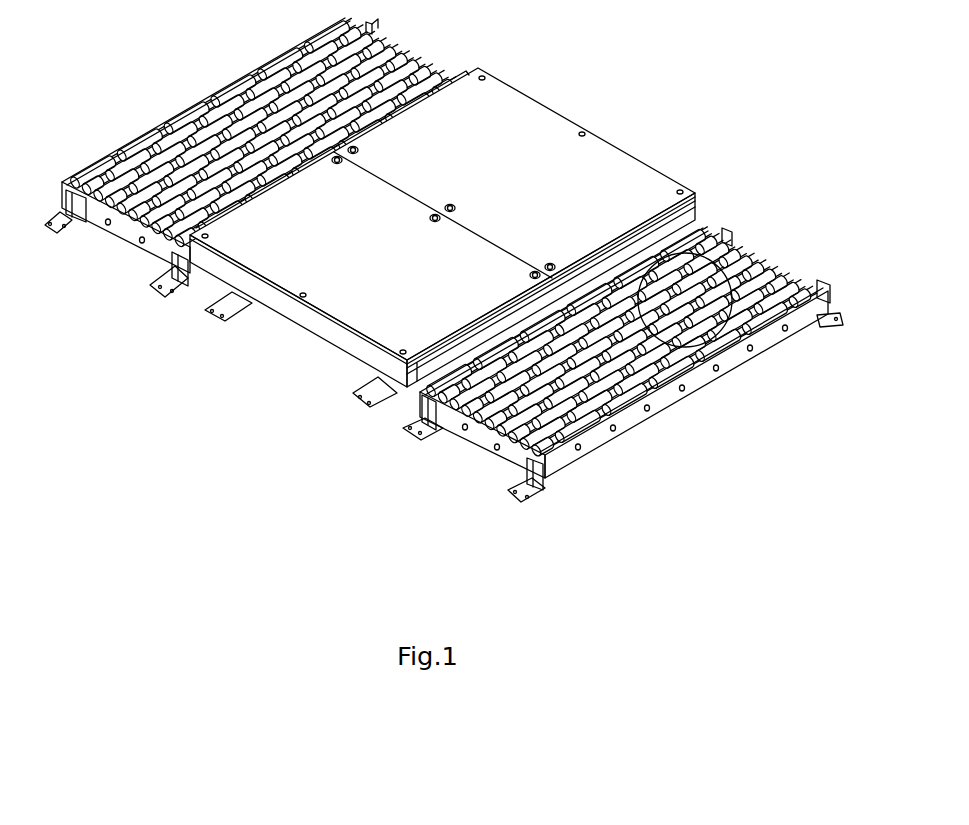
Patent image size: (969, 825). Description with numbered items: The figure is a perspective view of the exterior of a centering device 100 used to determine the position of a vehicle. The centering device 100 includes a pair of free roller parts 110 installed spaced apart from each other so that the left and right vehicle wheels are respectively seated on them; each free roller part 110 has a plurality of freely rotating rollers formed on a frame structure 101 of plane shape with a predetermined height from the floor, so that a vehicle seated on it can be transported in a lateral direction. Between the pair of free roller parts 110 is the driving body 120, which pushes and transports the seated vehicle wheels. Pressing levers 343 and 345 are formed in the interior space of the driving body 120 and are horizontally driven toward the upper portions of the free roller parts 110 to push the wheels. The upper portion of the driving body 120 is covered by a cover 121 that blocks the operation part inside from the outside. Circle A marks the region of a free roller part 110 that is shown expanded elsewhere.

The centering device 100 is at (444, 260).
The frame structure 101 is at (710, 384).
The free roller part 110 is at (118, 229).
The driving body 120 is at (289, 315).
The cover 121 is at (536, 132).
The pressing lever 343 is at (453, 74).
The pressing lever 345 is at (685, 214).
The circle A is at (720, 270).